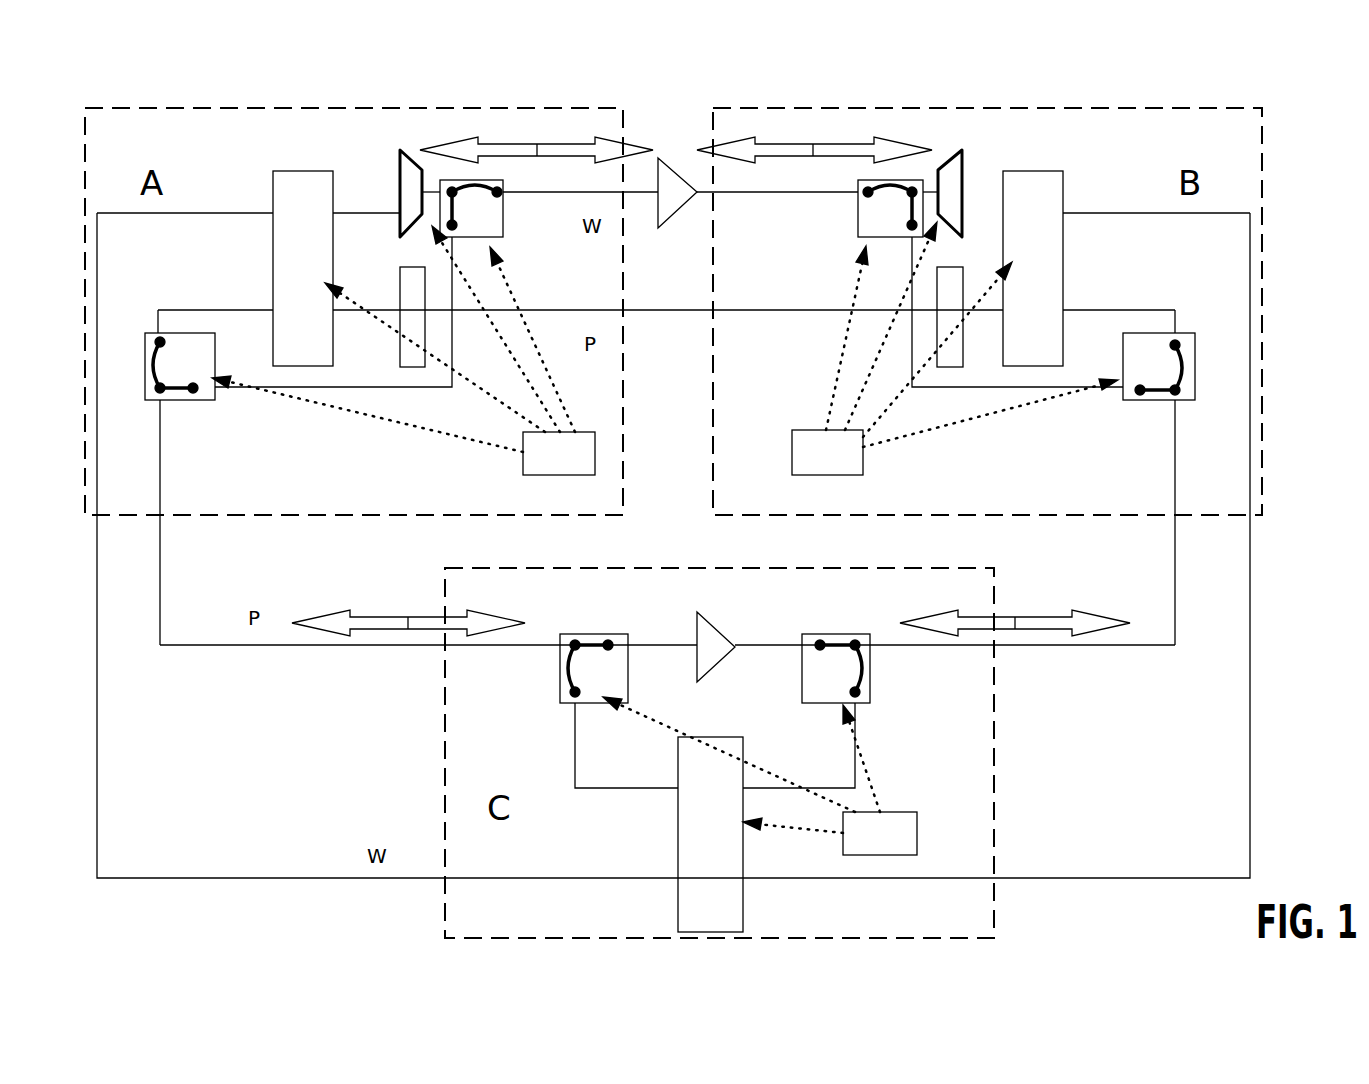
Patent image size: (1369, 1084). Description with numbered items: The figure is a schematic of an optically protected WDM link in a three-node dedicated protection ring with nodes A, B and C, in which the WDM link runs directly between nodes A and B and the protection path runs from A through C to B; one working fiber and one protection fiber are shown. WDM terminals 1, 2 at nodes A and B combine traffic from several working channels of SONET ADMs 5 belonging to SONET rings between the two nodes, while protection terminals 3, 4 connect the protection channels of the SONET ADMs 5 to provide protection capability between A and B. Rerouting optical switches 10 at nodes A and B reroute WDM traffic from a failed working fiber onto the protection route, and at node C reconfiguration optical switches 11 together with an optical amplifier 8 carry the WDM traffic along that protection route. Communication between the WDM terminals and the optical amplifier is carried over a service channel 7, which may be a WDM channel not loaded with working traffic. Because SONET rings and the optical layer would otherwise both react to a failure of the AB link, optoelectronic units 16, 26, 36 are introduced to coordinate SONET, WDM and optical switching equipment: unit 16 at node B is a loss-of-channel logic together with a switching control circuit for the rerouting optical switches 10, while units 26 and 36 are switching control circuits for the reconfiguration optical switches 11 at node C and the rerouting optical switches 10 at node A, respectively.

The WDM terminal 1 is at (398, 196).
The WDM terminal 2 is at (963, 193).
The protection terminal 3 is at (400, 353).
The protection terminal 4 is at (963, 372).
The SONET ADM 5 is at (310, 282).
The service channel 7 is at (526, 143).
The optical amplifier 8 is at (690, 207).
The rerouting optical switch 10 is at (490, 227).
The reconfiguration optical switch 11 is at (612, 683).
The optoelectronic unit 16 is at (840, 465).
The optoelectronic unit 26 is at (892, 845).
The optoelectronic unit 36 is at (571, 465).